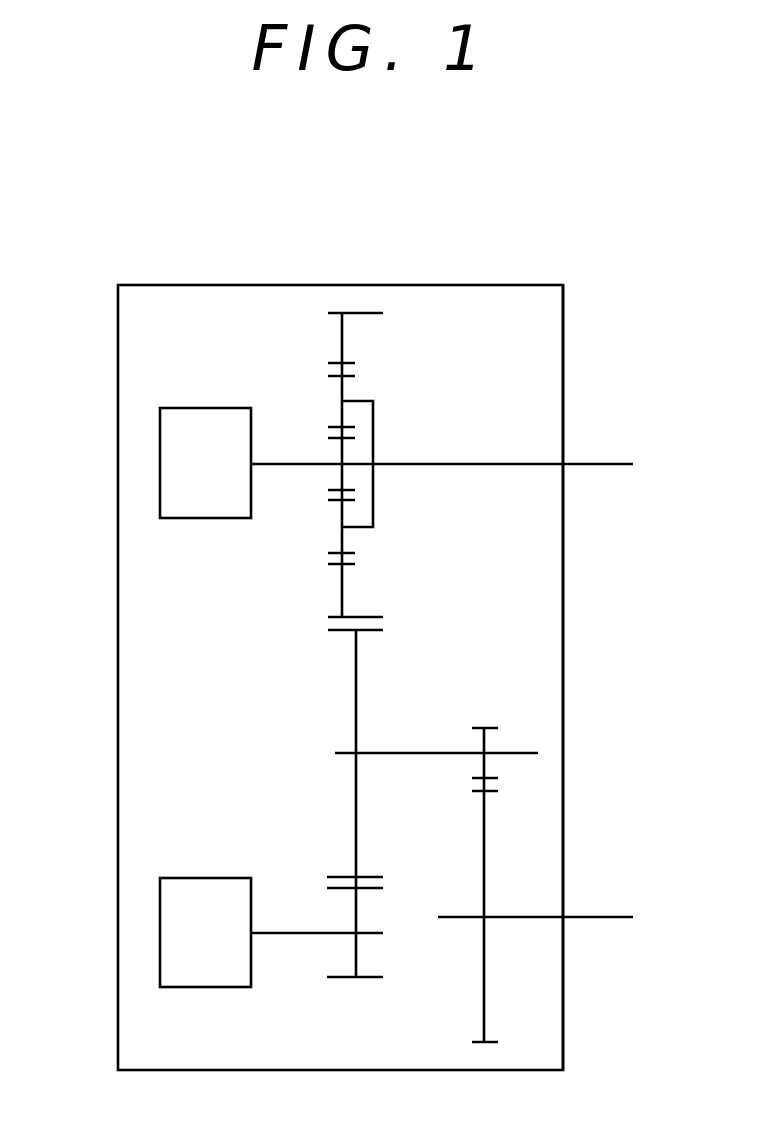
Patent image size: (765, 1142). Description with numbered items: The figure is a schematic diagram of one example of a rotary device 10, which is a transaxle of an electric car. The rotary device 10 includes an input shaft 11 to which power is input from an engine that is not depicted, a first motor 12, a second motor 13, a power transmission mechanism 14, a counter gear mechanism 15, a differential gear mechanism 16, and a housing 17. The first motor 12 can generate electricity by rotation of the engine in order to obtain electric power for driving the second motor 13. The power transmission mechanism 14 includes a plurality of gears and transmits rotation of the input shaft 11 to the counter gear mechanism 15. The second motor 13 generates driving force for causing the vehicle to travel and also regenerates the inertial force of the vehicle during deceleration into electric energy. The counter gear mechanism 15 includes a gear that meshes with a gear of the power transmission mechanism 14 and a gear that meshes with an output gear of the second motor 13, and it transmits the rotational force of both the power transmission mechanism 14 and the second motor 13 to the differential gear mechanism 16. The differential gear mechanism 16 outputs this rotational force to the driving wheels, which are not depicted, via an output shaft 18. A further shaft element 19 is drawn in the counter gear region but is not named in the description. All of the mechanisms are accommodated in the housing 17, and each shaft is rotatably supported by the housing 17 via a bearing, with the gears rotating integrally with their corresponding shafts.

The rotary device 10 is at (482, 283).
The input shaft 11 is at (608, 463).
The first motor 12 is at (160, 468).
The second motor 13 is at (160, 930).
The power transmission mechanism 14 is at (407, 507).
The counter gear mechanism 15 is at (443, 690).
The differential gear mechanism 16 is at (515, 968).
The housing 17 is at (563, 697).
The output shaft 18 is at (605, 915).
The intermediate shaft 19 is at (405, 755).